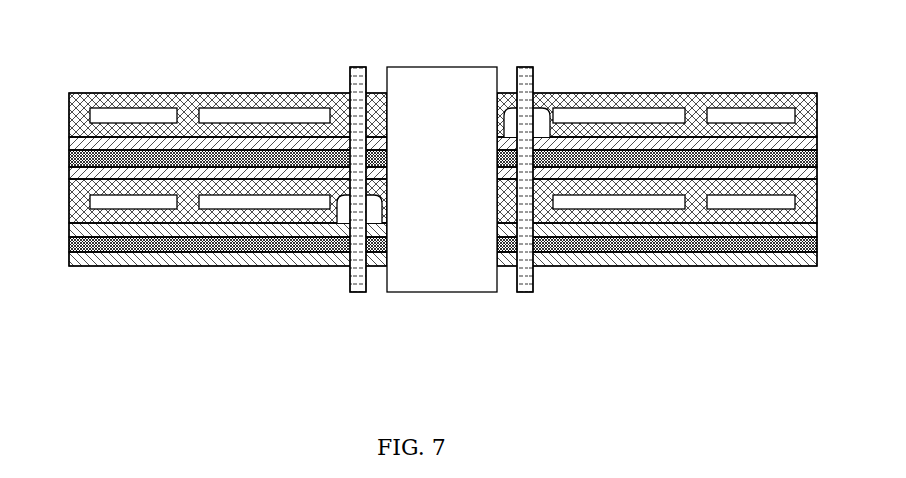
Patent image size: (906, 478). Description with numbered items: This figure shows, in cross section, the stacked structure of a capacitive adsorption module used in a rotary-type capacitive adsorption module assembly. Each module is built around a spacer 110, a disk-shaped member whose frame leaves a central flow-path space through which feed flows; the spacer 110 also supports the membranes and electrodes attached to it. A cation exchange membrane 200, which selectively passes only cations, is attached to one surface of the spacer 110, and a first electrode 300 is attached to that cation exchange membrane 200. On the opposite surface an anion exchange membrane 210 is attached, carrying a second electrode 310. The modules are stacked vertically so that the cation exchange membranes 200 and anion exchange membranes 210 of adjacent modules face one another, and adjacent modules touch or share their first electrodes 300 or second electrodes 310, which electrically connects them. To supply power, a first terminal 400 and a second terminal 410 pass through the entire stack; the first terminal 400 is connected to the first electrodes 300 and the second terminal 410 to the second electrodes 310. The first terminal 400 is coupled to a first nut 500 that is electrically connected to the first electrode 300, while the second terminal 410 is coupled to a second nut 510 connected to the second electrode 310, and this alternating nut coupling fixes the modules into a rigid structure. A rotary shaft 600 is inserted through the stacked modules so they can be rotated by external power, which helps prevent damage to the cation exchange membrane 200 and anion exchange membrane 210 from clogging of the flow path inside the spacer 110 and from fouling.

The spacer 110 is at (818, 113).
The cation exchange membrane 200 is at (443, 159).
The anion exchange membrane 210 is at (443, 245).
The first electrode 300 is at (818, 156).
The second electrode 310 is at (818, 240).
The first terminal 400 is at (528, 67).
The second terminal 410 is at (358, 292).
The first nut 500 is at (548, 110).
The second nut 510 is at (343, 232).
The rotary shaft 600 is at (447, 67).